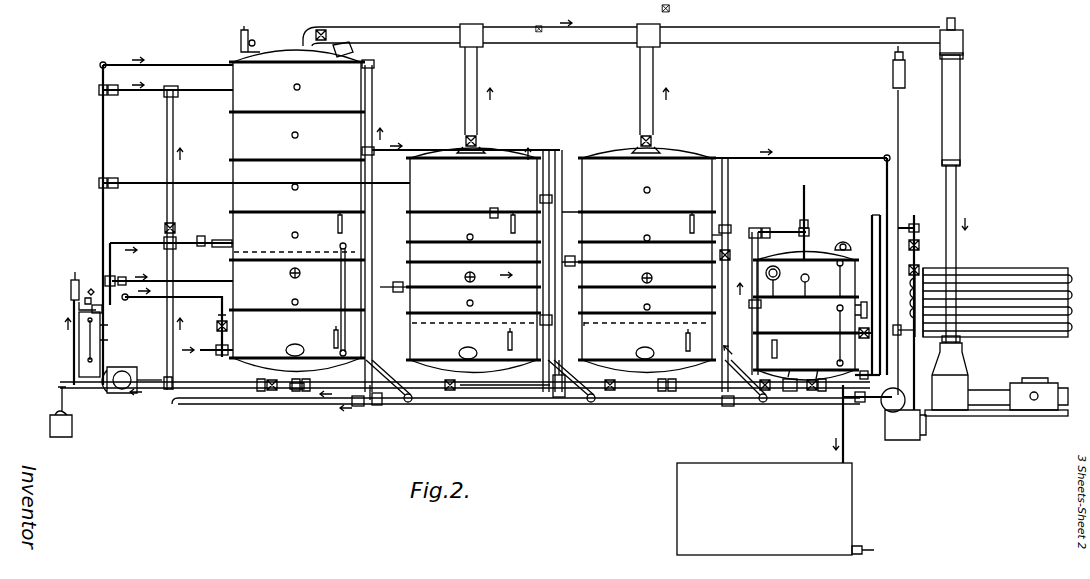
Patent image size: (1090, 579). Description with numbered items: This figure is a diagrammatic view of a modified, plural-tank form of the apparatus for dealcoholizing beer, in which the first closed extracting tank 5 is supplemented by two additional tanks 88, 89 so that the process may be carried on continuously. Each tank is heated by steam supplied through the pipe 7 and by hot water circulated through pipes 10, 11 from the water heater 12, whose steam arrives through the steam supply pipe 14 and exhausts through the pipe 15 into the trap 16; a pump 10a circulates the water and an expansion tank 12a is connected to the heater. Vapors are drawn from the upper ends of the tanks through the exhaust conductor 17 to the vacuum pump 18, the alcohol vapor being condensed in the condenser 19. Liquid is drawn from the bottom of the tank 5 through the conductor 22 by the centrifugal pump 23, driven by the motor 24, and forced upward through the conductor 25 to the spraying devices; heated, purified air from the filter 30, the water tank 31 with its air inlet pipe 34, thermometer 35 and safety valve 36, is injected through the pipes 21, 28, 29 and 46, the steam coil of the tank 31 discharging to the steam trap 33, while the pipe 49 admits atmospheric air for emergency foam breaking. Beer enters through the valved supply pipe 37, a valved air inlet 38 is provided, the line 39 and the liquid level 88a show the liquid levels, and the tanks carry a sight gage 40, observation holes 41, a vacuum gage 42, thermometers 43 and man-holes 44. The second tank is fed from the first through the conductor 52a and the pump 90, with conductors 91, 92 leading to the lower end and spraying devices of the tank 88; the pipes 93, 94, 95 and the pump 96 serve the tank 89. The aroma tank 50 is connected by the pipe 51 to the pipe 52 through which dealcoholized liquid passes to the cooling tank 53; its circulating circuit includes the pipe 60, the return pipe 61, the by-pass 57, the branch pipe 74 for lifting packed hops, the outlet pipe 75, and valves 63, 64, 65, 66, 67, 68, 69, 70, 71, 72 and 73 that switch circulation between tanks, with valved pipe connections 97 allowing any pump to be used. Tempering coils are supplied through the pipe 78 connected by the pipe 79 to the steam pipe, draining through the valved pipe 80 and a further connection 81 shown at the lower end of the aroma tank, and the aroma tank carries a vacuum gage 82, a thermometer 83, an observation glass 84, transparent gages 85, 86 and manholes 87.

The closed tank 5 is at (236, 137).
The pipe 7 is at (373, 140).
The pipe 10 is at (900, 346).
The pump 10a is at (860, 402).
The pipe 11 is at (915, 314).
The water heater 12 is at (1005, 270).
The expansion tank 12a is at (893, 79).
The steam supply pipe 14 is at (914, 220).
The pipe 15 is at (926, 361).
The trap 16 is at (907, 440).
The exhaust conductor 17 is at (958, 248).
The vacuum pump 18 is at (962, 368).
The condenser 19 is at (958, 133).
The pipe 21 is at (200, 297).
The conductor 22 is at (200, 392).
The centrifugal pump 23 is at (168, 388).
The motor 24 is at (141, 369).
The conductor 25 is at (167, 345).
The pipe 28 is at (120, 92).
The pipe 29 is at (123, 243).
The filter 30 is at (71, 285).
The tank 31 is at (79, 360).
The steam trap 33 is at (51, 412).
The pipe 34 is at (74, 345).
The thermometer 35 is at (88, 292).
The safety valve 36 is at (79, 308).
The valved supply pipe 37 is at (207, 357).
The valved air inlet 38 is at (217, 325).
The line 39 is at (275, 253).
The transparent sight gage 40 is at (340, 297).
The glass-covered observation holes 41 is at (296, 133).
The vacuum gage 42 is at (300, 273).
The thermometers 43 is at (241, 42).
The man-holes 44 is at (353, 51).
The pipe 46 is at (168, 65).
The pipe 49 is at (372, 84).
The aroma tank 50 is at (806, 316).
The pipe 51 is at (772, 236).
The pipe 52 is at (812, 391).
The conductor 52a is at (358, 406).
The cooling tank 53 is at (675, 512).
The by-pass 57 is at (848, 318).
The pipe 60 is at (302, 392).
The return pipe 61 is at (198, 236).
The valve 63 is at (275, 392).
The valve 64 is at (167, 223).
The valve 65 is at (177, 244).
The valve 66 is at (765, 392).
The valve 67 is at (246, 401).
The valve 68 is at (178, 231).
The valve 69 is at (740, 371).
The valve 70 is at (818, 367).
The valve 71 is at (790, 366).
The valve 72 is at (761, 232).
The valve 73 is at (842, 420).
The valved branch pipe 74 is at (720, 285).
The valved outlet pipe 75 is at (804, 186).
The pipe 78 is at (867, 338).
The pipe 79 is at (890, 215).
The valved pipe 80 is at (790, 391).
The pipe 81 is at (867, 375).
The vacuum gage 82 is at (772, 281).
The thermometer 83 is at (785, 347).
The observation glass 84 is at (801, 285).
The transparent gage 85 is at (838, 272).
The transparent gage 86 is at (838, 342).
The manholes 87 is at (843, 247).
The additional tank 88 is at (460, 260).
The liquid level 88a is at (561, 341).
The additional tank 89 is at (647, 193).
The pump 90 is at (378, 408).
The conductor 91 is at (408, 400).
The conductor 92 is at (454, 319).
The pipe 93 is at (503, 390).
The pipe 94 is at (590, 400).
The pipe 95 is at (622, 329).
The pump 96 is at (562, 398).
The valved pipe connections 97 is at (450, 391).